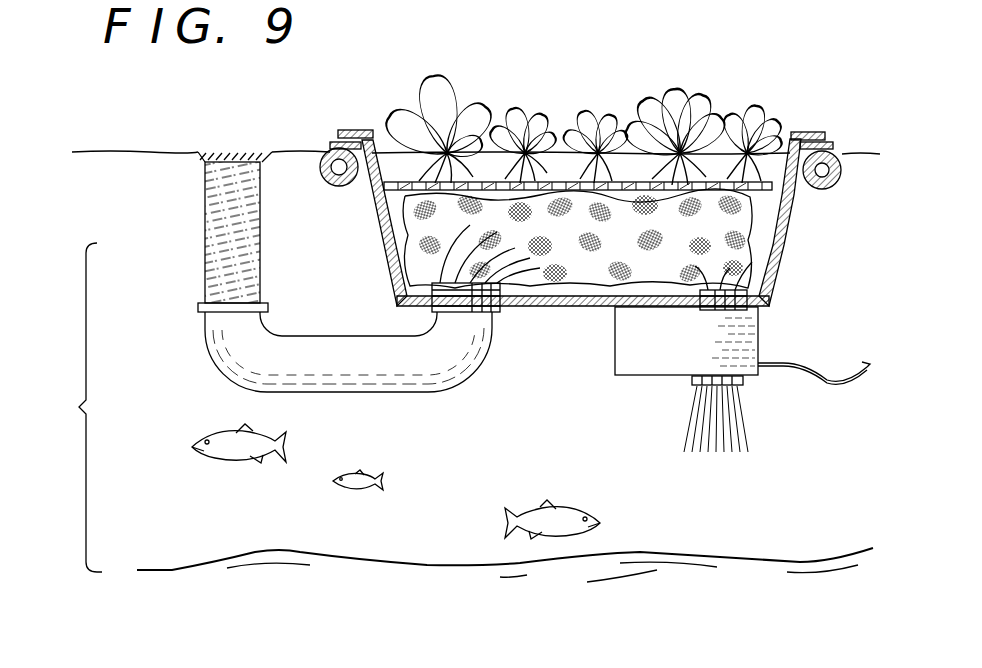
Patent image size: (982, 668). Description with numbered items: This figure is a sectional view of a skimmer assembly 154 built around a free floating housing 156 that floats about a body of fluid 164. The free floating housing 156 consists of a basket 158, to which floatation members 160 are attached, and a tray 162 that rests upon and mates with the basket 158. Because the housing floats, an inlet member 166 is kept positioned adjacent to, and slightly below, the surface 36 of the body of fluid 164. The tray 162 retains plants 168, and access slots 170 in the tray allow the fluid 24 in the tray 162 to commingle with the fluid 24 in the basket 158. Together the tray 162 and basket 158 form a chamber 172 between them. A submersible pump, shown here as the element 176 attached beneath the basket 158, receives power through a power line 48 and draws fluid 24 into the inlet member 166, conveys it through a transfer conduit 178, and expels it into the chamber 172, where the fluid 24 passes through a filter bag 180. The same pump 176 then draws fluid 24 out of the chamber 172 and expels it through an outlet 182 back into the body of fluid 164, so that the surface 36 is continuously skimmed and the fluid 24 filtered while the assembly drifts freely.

The fluid 24 is at (177, 165).
The surface 36 is at (172, 152).
The power line 48 is at (841, 386).
The skimmer assembly 154 is at (738, 54).
The free floating housing 156 is at (872, 295).
The basket 158 is at (388, 248).
The floatation members 160 is at (350, 188).
The tray 162 is at (359, 130).
The body of fluid 164 is at (118, 178).
The inlet member 166 is at (230, 153).
The plants 168 is at (433, 88).
The access slots 170 is at (487, 183).
The chamber 172 is at (770, 283).
The pump housing 176 is at (667, 378).
The transfer conduit 178 is at (222, 353).
The filter bag 180 is at (621, 273).
The outlet 182 is at (738, 387).